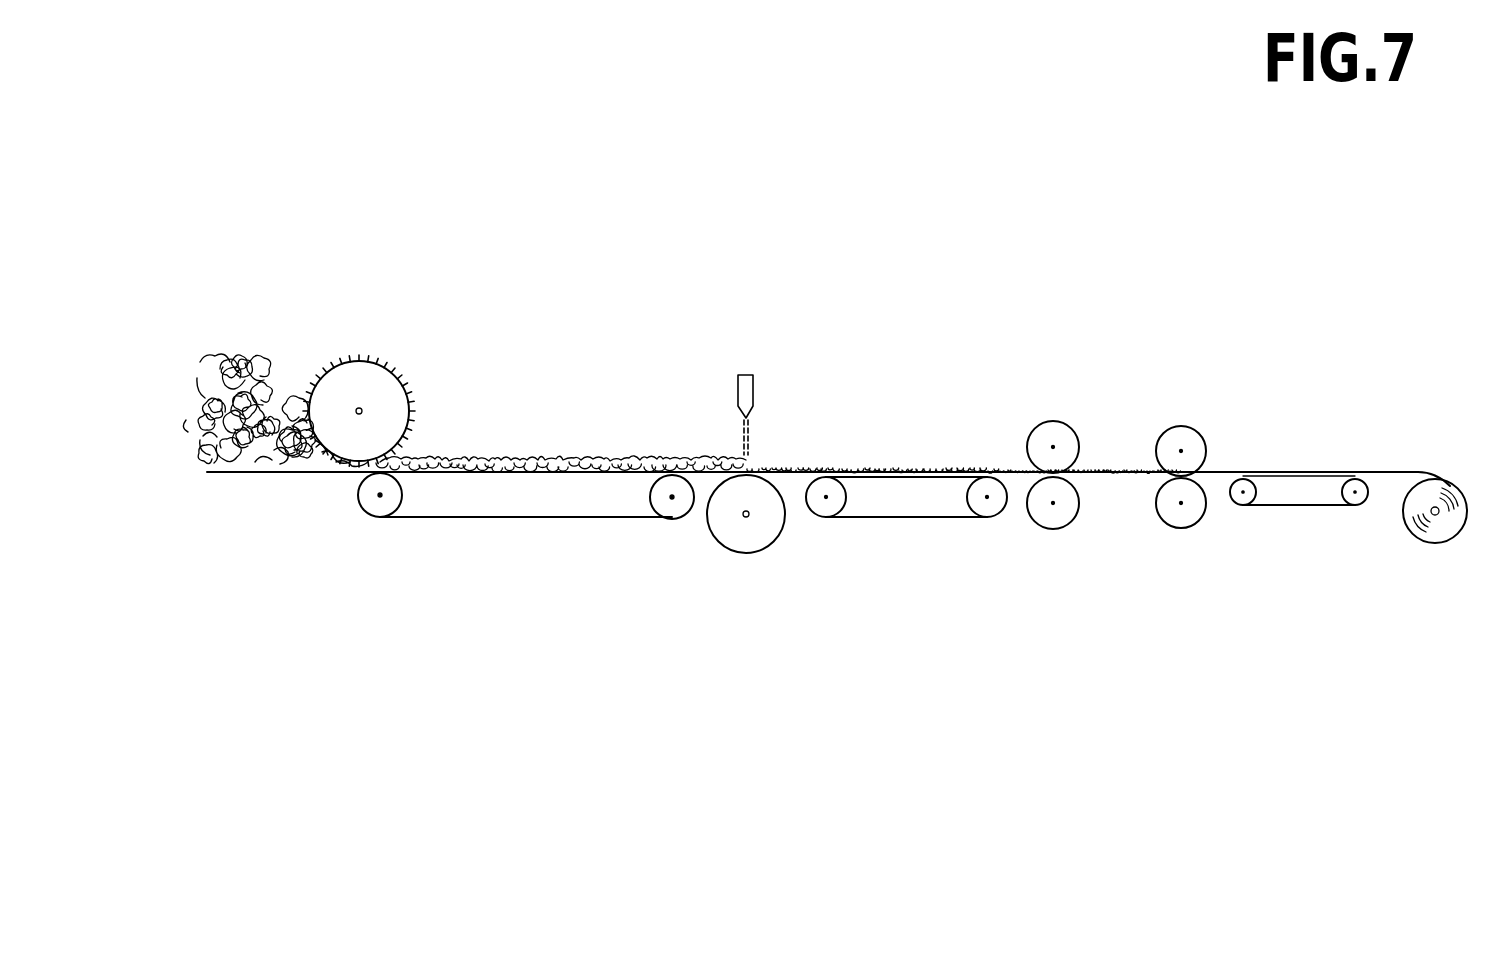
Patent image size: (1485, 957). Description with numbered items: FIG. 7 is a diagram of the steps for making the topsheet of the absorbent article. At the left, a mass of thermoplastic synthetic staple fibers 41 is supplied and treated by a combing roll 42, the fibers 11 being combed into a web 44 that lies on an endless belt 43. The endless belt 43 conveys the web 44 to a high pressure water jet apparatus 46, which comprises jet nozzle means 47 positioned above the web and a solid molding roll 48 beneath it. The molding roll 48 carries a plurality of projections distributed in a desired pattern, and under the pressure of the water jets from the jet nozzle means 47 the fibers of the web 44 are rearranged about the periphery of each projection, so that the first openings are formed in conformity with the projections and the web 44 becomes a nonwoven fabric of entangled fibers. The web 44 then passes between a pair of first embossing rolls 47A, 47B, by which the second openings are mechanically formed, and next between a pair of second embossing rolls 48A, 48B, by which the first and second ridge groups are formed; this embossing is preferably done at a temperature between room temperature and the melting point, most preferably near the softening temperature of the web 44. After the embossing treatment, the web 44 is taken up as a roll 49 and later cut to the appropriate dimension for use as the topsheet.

The thermoplastic synthetic staple fibers 41 is at (196, 338).
The cotton fibers 11 is at (250, 378).
The combing roll 42 is at (405, 378).
The endless belt 43 is at (582, 520).
The web 44 is at (502, 463).
The high pressure water jet apparatus 46 is at (766, 369).
The jet nozzle means 47 is at (753, 407).
The solid molding roll 48 is at (776, 539).
The first embossing roll 47A is at (1067, 423).
The first embossing roll 47B is at (1061, 526).
The second embossing roll 48A is at (1198, 436).
The second embossing roll 48B is at (1188, 527).
The wind-up roll 49 is at (1443, 544).